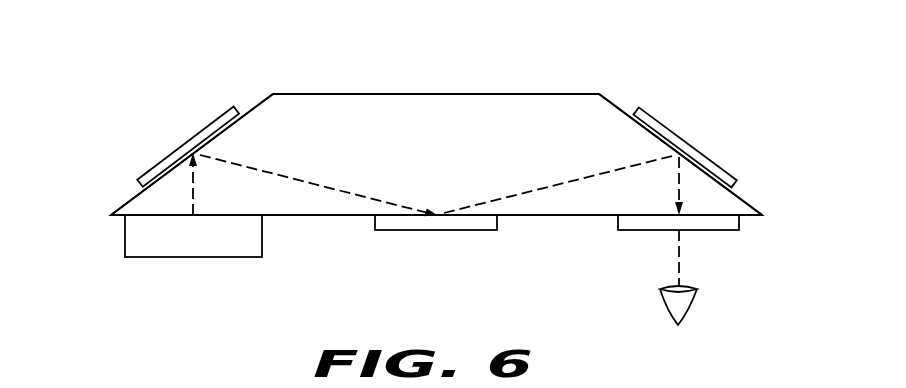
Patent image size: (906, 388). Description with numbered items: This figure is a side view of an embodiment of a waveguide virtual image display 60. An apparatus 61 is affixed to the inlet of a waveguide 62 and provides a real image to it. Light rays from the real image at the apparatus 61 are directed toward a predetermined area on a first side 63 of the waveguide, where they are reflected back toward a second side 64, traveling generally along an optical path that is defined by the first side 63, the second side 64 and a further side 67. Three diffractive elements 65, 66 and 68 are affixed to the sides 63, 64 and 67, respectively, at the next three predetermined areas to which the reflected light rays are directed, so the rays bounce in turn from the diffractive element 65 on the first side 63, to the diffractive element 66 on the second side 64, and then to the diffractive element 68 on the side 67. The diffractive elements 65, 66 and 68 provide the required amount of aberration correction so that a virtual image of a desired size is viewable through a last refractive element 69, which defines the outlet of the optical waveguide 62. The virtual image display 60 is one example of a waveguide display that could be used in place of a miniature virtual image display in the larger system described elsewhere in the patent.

The virtual image display 60 is at (530, 43).
The apparatus 61 is at (185, 258).
The waveguide 62 is at (400, 94).
The first side 63 is at (123, 208).
The second side 64 is at (335, 215).
The diffractive element 65 is at (207, 126).
The diffractive element 66 is at (443, 230).
The side 67 is at (748, 207).
The diffractive element 68 is at (668, 127).
The last refractive element 69 is at (647, 232).